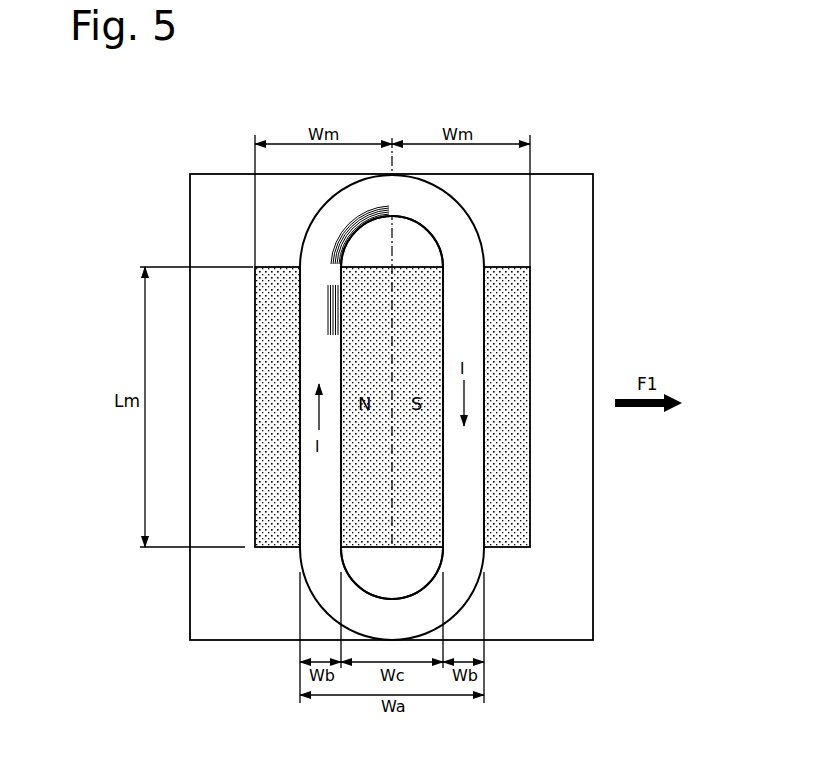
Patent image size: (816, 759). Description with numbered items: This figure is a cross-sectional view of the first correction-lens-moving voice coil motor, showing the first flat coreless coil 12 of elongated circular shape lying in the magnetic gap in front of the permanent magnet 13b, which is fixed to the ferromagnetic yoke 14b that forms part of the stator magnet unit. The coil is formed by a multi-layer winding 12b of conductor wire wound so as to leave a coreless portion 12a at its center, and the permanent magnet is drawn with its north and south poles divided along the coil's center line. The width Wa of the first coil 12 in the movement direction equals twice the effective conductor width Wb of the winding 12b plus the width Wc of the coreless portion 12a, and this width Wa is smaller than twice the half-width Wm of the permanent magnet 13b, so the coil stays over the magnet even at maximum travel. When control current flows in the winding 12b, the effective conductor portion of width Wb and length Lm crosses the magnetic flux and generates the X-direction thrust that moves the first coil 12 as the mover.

The first flat coreless coil 12 is at (453, 189).
The coreless portion 12a is at (405, 250).
The multi-layer winding 12b is at (468, 318).
The permanent magnet 13b is at (517, 459).
The yoke 14b is at (578, 588).